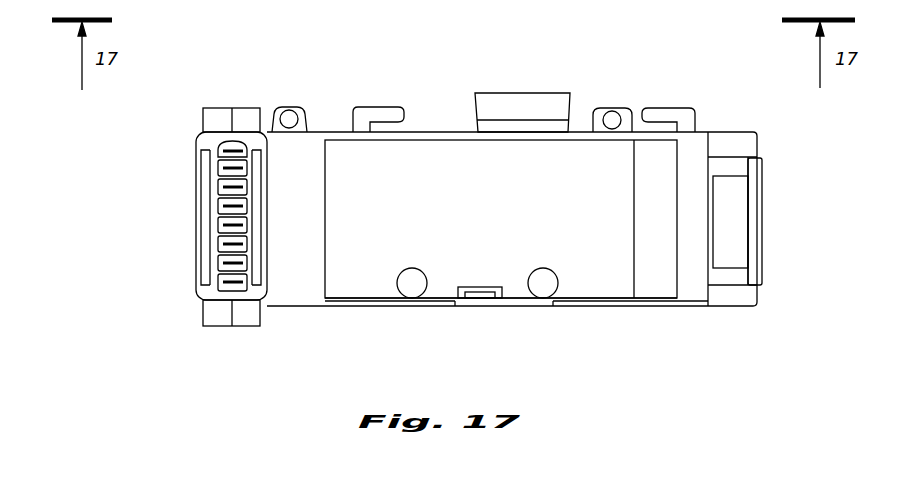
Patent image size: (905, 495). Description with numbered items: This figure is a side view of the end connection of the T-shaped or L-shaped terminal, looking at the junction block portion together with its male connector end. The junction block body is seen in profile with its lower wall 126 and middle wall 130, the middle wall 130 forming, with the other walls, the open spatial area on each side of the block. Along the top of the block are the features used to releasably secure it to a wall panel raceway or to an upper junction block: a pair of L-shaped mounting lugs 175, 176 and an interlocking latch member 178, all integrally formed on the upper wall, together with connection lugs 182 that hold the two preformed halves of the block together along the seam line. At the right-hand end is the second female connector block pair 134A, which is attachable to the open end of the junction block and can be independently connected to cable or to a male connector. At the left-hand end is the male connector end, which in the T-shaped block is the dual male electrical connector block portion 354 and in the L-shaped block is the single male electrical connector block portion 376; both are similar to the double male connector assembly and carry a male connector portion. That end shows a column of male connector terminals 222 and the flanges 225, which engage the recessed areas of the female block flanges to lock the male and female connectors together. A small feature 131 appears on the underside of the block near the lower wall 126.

The middle wall 130 is at (547, 196).
The second female connector block pair 134A is at (782, 216).
The bottom nub 131 is at (475, 293).
The lower wall 126 is at (347, 297).
The connection lug 182 is at (299, 108).
The L-shaped mounting lug 175 is at (383, 107).
The interlocking latch member 178 is at (547, 93).
The L-shaped mounting lug 176 is at (672, 113).
The dual male electrical connector block portion 354 is at (178, 236).
The single male electrical connector block portion 376 is at (216, 217).
The flanges 225 is at (200, 262).
The male connector terminals 222 is at (242, 210).